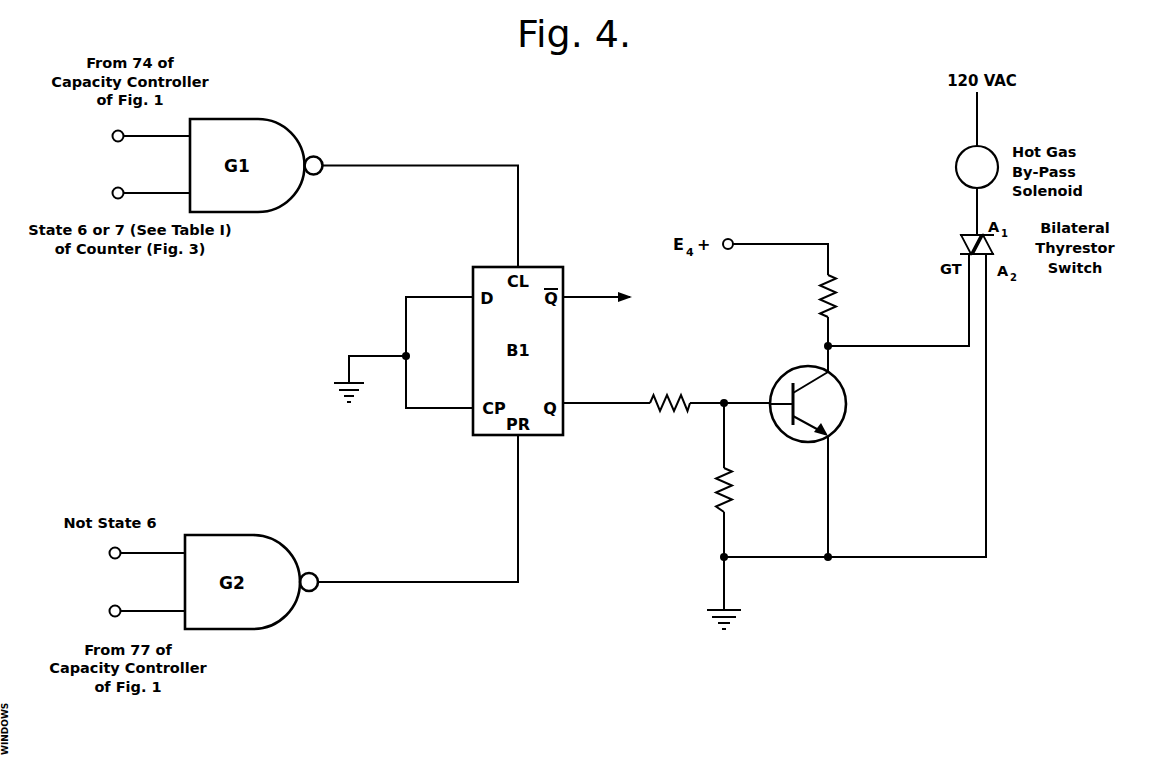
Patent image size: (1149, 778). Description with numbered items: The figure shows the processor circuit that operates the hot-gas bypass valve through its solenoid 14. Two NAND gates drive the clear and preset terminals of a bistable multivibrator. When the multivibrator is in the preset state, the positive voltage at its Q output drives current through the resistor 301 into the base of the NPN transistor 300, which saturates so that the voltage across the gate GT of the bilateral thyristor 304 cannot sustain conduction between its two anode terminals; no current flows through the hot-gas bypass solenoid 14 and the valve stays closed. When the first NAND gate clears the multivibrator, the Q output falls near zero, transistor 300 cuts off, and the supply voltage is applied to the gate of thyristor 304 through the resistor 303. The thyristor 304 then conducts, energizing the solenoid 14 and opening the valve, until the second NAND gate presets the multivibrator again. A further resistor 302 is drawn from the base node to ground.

The hot-gas bypass solenoid 14 is at (977, 167).
The NPN transistor 300 is at (828, 404).
The resistor 301 is at (670, 392).
The resistor 302 is at (745, 490).
The resistor 303 is at (850, 296).
The bilateral thyristor 304 is at (958, 245).